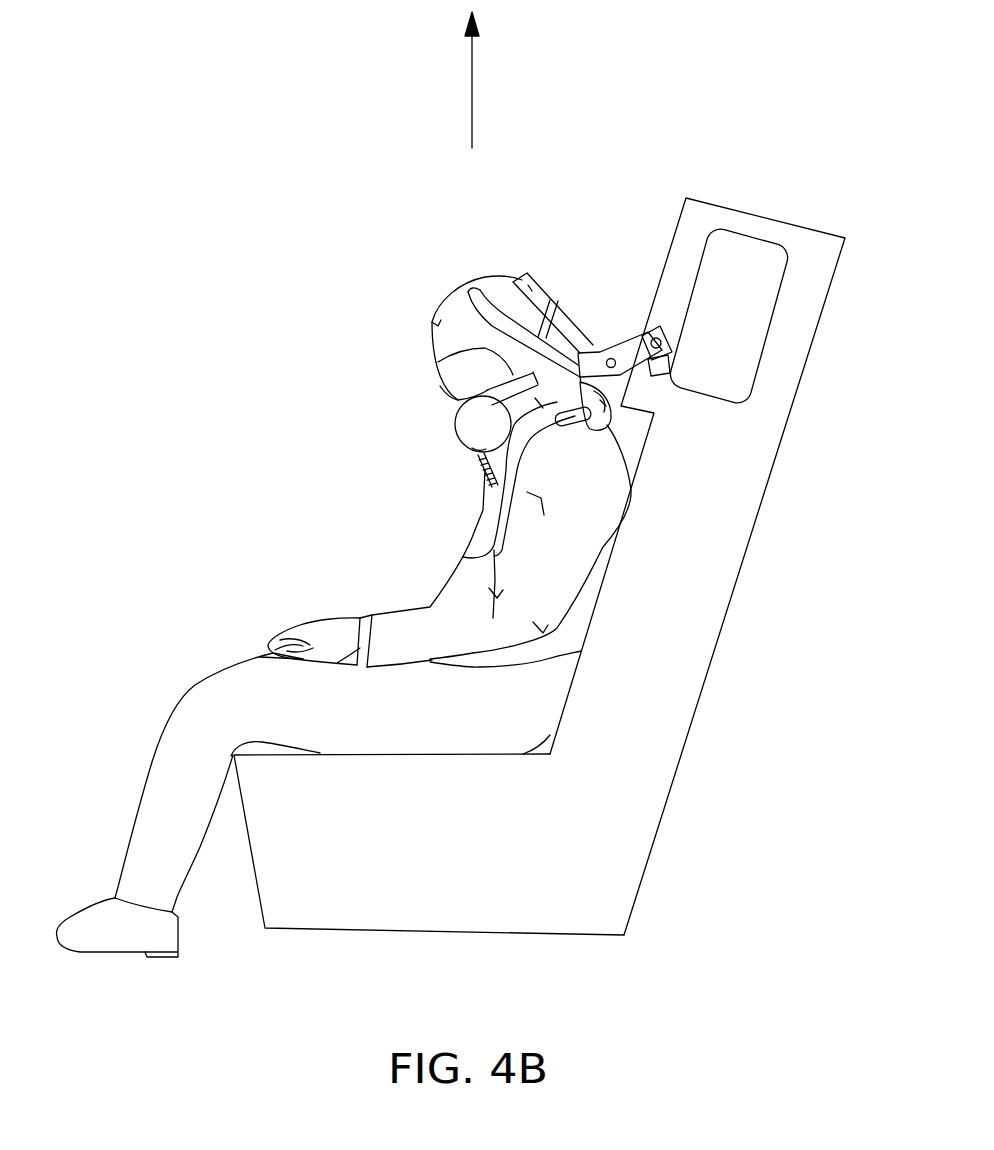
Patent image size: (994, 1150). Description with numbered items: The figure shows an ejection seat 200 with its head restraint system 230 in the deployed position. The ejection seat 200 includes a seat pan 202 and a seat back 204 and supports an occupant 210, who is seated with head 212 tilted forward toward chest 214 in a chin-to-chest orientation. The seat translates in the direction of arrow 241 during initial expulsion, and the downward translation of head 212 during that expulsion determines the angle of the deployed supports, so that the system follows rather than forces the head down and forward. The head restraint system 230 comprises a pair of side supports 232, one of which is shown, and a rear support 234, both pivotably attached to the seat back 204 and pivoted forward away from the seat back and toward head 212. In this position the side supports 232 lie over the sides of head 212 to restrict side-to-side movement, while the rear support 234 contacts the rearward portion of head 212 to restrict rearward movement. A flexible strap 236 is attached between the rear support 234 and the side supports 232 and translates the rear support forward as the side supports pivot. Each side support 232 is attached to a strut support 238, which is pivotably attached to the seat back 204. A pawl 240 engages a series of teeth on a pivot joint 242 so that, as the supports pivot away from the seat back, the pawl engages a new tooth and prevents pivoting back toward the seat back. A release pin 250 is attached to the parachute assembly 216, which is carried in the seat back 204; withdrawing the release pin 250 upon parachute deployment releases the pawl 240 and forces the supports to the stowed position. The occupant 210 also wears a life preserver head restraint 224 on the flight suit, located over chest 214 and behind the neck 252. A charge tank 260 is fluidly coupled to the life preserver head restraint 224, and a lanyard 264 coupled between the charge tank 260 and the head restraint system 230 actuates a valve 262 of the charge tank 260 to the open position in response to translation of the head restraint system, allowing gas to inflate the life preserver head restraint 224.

The ejection seat 200 is at (560, 542).
The seat pan 202 is at (440, 850).
The seat back 204 is at (670, 605).
The parachute assembly 216 is at (772, 246).
The occupant 210 is at (344, 616).
The head 212 is at (434, 325).
The chest 214 is at (465, 558).
The life preserver head restraint 224 is at (483, 508).
The head restraint system 230 is at (594, 366).
The side supports 232 is at (472, 290).
The rear support 234 is at (532, 283).
The flexible strap 236 is at (562, 320).
The strut support 238 is at (634, 345).
The pawl 240 is at (671, 362).
The arrow 241 is at (474, 93).
The pivot joint 242 is at (663, 340).
The release pin 250 is at (657, 372).
The neck 252 is at (555, 404).
The charge tank 260 is at (565, 423).
The valve 262 is at (590, 433).
The lanyard 264 is at (604, 404).